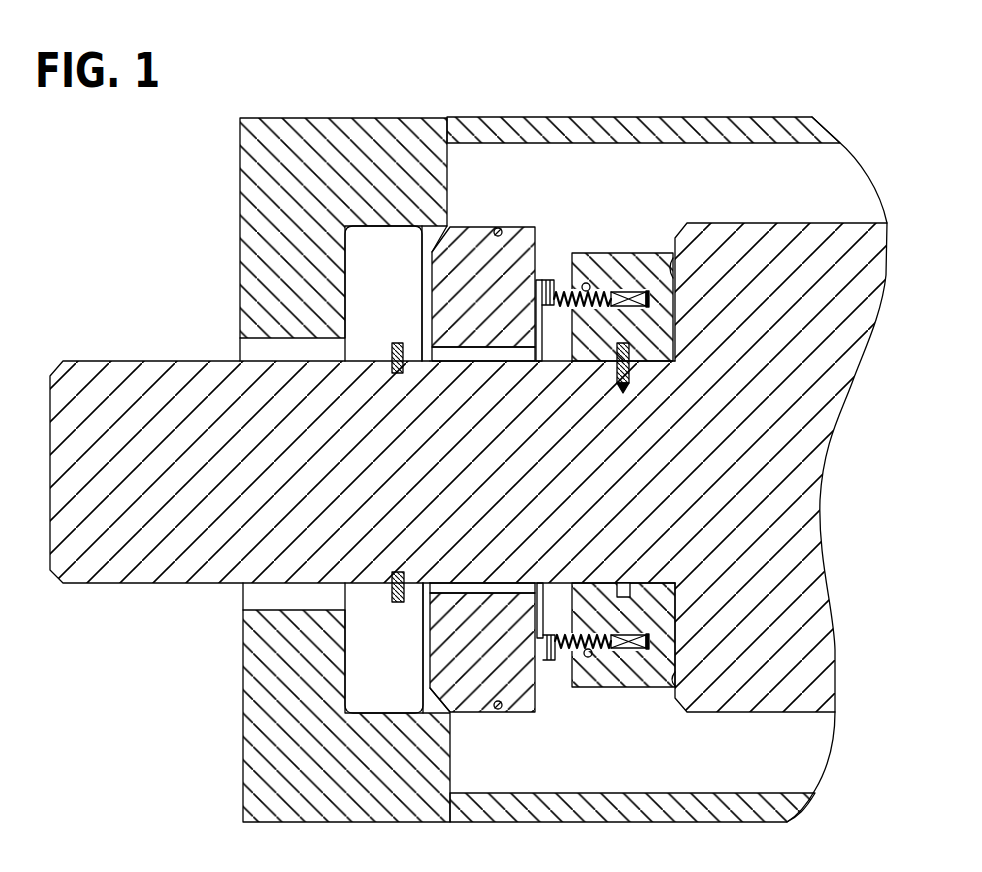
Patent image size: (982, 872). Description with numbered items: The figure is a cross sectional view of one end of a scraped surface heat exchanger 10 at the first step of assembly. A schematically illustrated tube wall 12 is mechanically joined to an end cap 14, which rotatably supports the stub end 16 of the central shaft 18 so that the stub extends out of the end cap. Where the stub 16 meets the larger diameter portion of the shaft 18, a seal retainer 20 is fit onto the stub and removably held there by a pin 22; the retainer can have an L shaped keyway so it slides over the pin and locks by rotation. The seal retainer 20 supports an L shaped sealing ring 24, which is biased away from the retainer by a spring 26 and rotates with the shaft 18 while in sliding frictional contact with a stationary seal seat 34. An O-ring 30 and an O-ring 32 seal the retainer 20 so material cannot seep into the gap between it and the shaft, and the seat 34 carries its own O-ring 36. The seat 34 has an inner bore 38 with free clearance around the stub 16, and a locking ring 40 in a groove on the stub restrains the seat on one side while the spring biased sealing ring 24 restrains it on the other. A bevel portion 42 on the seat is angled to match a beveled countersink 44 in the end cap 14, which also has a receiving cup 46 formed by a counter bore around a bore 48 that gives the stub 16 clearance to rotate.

The scraped surface heat exchanger 10 is at (750, 82).
The tube wall 12 is at (797, 128).
The end cap 14 is at (383, 140).
The stub end 16 is at (120, 395).
The central shaft 18 is at (787, 413).
The seal retainer 20 is at (665, 262).
The pin 22 is at (628, 386).
The sealing ring 24 is at (555, 295).
The spring 26 is at (677, 280).
The O-ring 30 is at (747, 253).
The O-ring 32 is at (603, 282).
The stationary seal seat 34 is at (550, 280).
The O-ring 36 is at (500, 226).
The inner bore 38 is at (424, 357).
The locking ring 40 is at (395, 344).
The bevel portion 42 is at (440, 233).
The beveled countersink 44 is at (444, 224).
The receiving cup 46 is at (370, 223).
The bore 48 is at (232, 340).